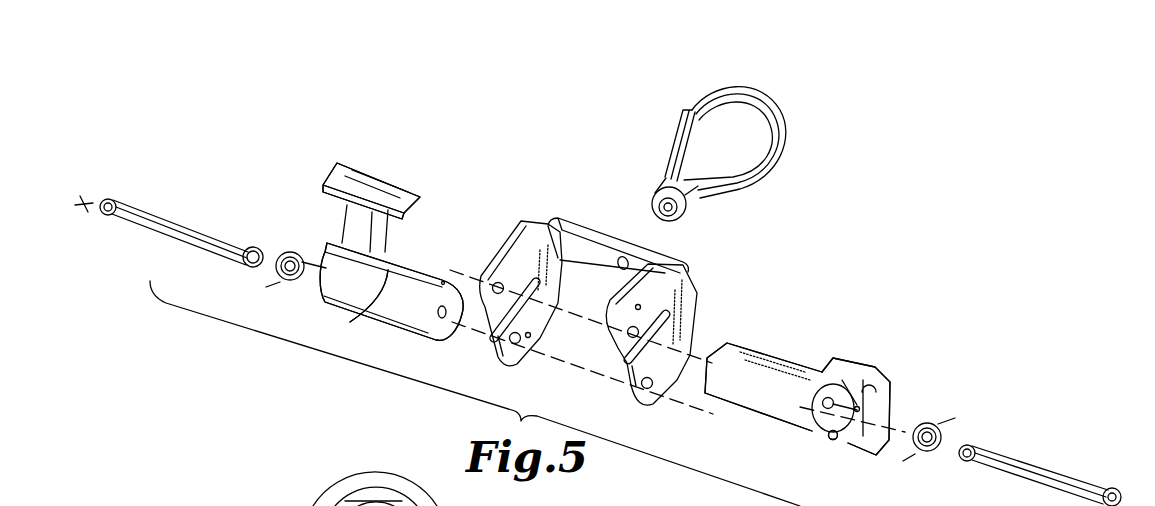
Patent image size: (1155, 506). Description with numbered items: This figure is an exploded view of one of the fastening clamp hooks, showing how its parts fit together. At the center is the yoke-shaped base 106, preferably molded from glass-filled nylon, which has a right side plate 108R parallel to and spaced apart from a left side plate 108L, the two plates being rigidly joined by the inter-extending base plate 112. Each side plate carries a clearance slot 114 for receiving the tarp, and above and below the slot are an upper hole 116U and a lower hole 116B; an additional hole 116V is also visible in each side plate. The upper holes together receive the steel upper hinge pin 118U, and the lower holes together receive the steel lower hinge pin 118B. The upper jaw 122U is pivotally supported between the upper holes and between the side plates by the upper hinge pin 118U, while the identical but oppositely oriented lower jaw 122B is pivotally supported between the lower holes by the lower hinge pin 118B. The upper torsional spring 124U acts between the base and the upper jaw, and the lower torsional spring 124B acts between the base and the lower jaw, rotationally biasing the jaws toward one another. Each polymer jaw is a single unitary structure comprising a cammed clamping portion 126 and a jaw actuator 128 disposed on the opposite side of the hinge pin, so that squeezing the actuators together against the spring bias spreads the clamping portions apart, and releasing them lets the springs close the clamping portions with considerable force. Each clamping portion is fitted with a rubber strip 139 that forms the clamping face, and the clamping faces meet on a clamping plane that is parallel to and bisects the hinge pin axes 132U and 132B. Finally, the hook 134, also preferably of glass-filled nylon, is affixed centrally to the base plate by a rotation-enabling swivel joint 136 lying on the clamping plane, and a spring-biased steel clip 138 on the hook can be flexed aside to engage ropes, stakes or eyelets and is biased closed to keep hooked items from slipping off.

The base 106 is at (599, 301).
The right side plate 108R is at (520, 263).
The left side plate 108L is at (673, 334).
The base plate 112 is at (618, 227).
The clearance slot 114 is at (490, 322).
The vertical hole 116V is at (496, 284).
The upper hole 116U is at (628, 333).
The lower hole 116B is at (519, 346).
The lower hinge pin 118B is at (182, 240).
The upper hinge pin 118U is at (1035, 467).
The lower jaw 122B is at (357, 162).
The upper jaw 122U is at (811, 359).
The lower torsional spring 124B is at (289, 251).
The upper torsional spring 124U is at (932, 413).
The cammed clamping portion 126 is at (413, 268).
The jaw actuator 128 is at (380, 180).
The lower hinge pin axis 132B is at (84, 200).
The upper hinge pin axis 132U is at (1148, 505).
The hook 134 is at (733, 157).
The swivel joint 136 is at (694, 220).
The clip 138 is at (678, 137).
The rubber strip 139 is at (375, 303).